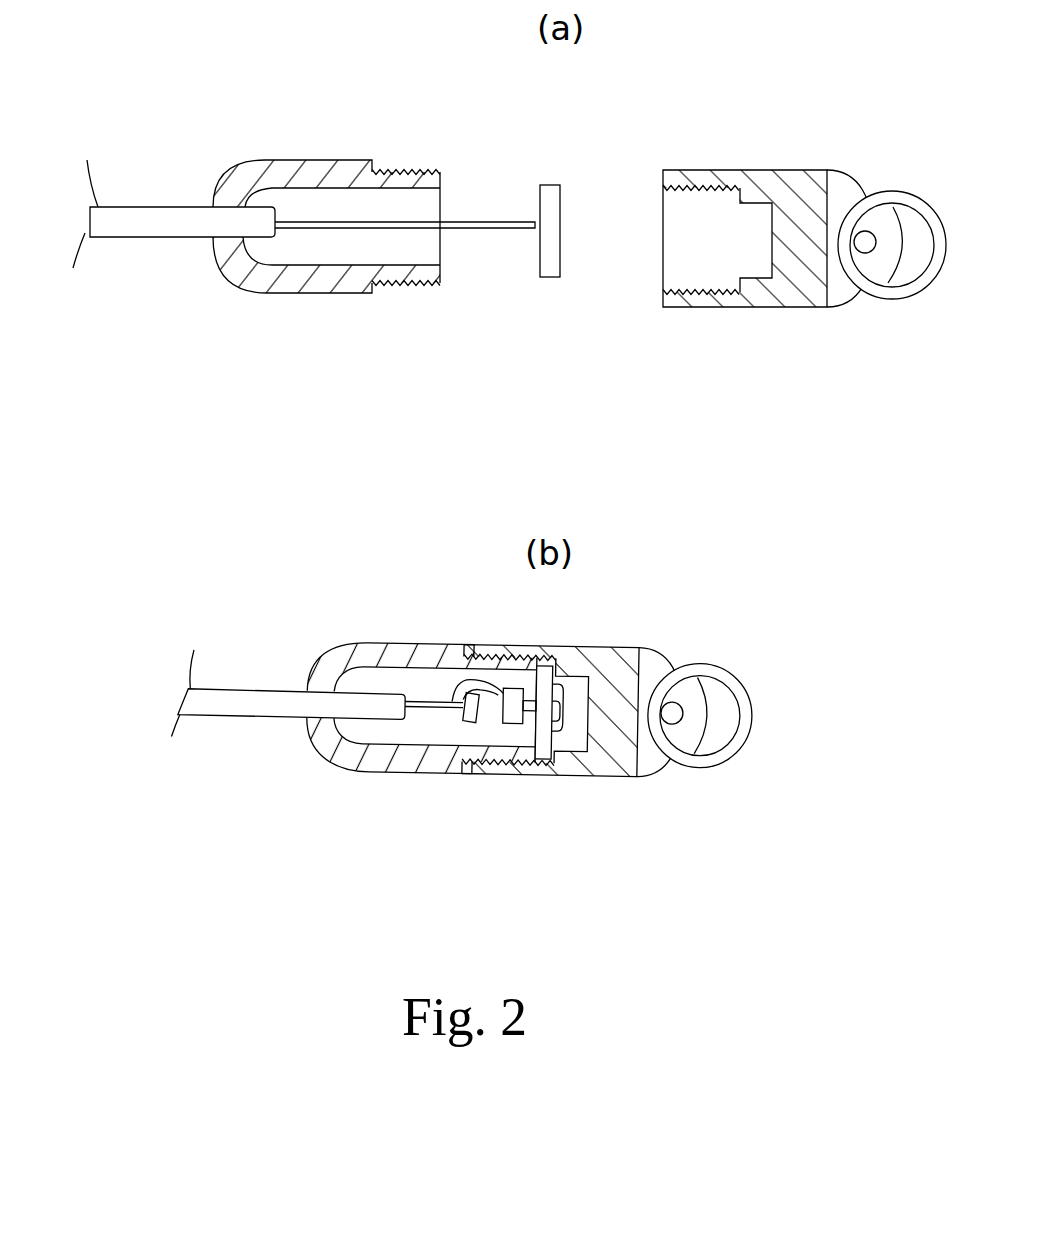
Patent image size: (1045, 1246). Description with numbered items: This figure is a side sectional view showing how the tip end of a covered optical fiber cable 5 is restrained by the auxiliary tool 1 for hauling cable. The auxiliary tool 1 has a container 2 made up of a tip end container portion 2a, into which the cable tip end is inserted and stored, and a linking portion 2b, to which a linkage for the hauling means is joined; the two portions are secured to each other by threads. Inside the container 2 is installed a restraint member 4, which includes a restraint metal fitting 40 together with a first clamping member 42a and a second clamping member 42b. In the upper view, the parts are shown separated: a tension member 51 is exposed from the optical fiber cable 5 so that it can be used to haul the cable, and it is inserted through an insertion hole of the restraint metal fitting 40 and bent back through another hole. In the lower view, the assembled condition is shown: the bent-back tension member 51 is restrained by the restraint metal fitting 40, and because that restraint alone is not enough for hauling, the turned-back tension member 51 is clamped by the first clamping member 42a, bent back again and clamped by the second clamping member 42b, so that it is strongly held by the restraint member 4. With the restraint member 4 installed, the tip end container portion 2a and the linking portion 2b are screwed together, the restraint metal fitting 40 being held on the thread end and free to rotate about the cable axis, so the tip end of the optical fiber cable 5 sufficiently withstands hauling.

The auxiliary tool for hauling cable 1 is at (735, 660).
The container 2 is at (579, 523).
The tip end container portion 2a is at (305, 285).
The linking portion 2b is at (775, 300).
The restraint member 4 is at (560, 678).
The optical fiber cable 5 is at (160, 213).
The restraint metal fitting 40 is at (553, 262).
The first clamping member 42a is at (462, 722).
The second clamping member 42b is at (515, 686).
The tension member 51 is at (490, 218).